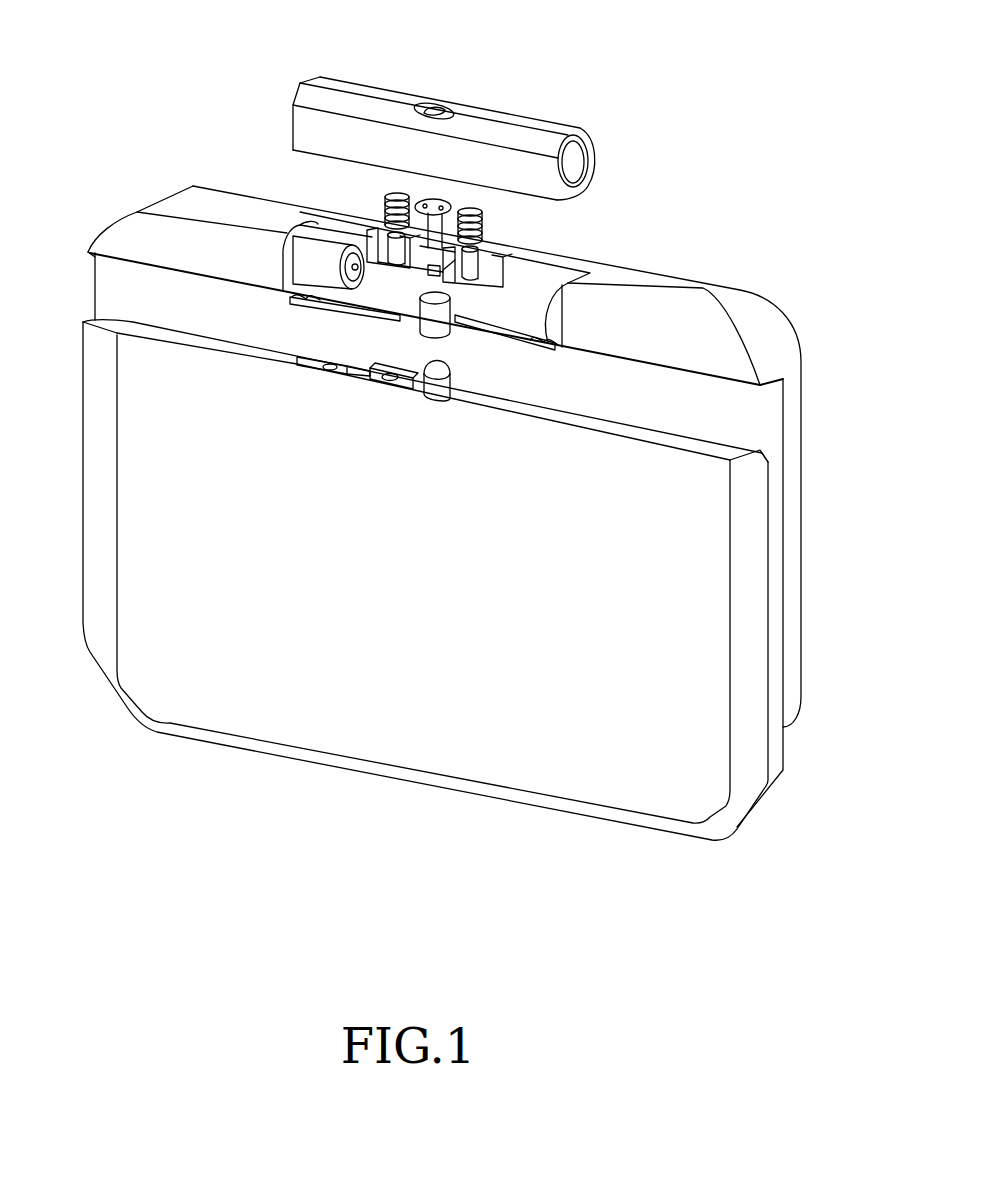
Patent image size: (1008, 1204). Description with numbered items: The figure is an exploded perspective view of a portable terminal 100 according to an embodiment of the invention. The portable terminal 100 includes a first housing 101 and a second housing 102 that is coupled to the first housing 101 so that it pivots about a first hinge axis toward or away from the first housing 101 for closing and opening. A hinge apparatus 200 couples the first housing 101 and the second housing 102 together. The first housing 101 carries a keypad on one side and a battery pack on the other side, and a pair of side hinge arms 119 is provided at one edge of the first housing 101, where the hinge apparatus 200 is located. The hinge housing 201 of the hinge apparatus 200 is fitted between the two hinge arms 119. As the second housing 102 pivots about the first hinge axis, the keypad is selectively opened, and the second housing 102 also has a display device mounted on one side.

The portable terminal 100 is at (163, 46).
The first housing 101 is at (458, 493).
The second housing 102 is at (435, 749).
The side hinge arms 119 is at (138, 235).
The hinge apparatus 200 is at (487, 181).
The hinge housing 201 is at (505, 117).